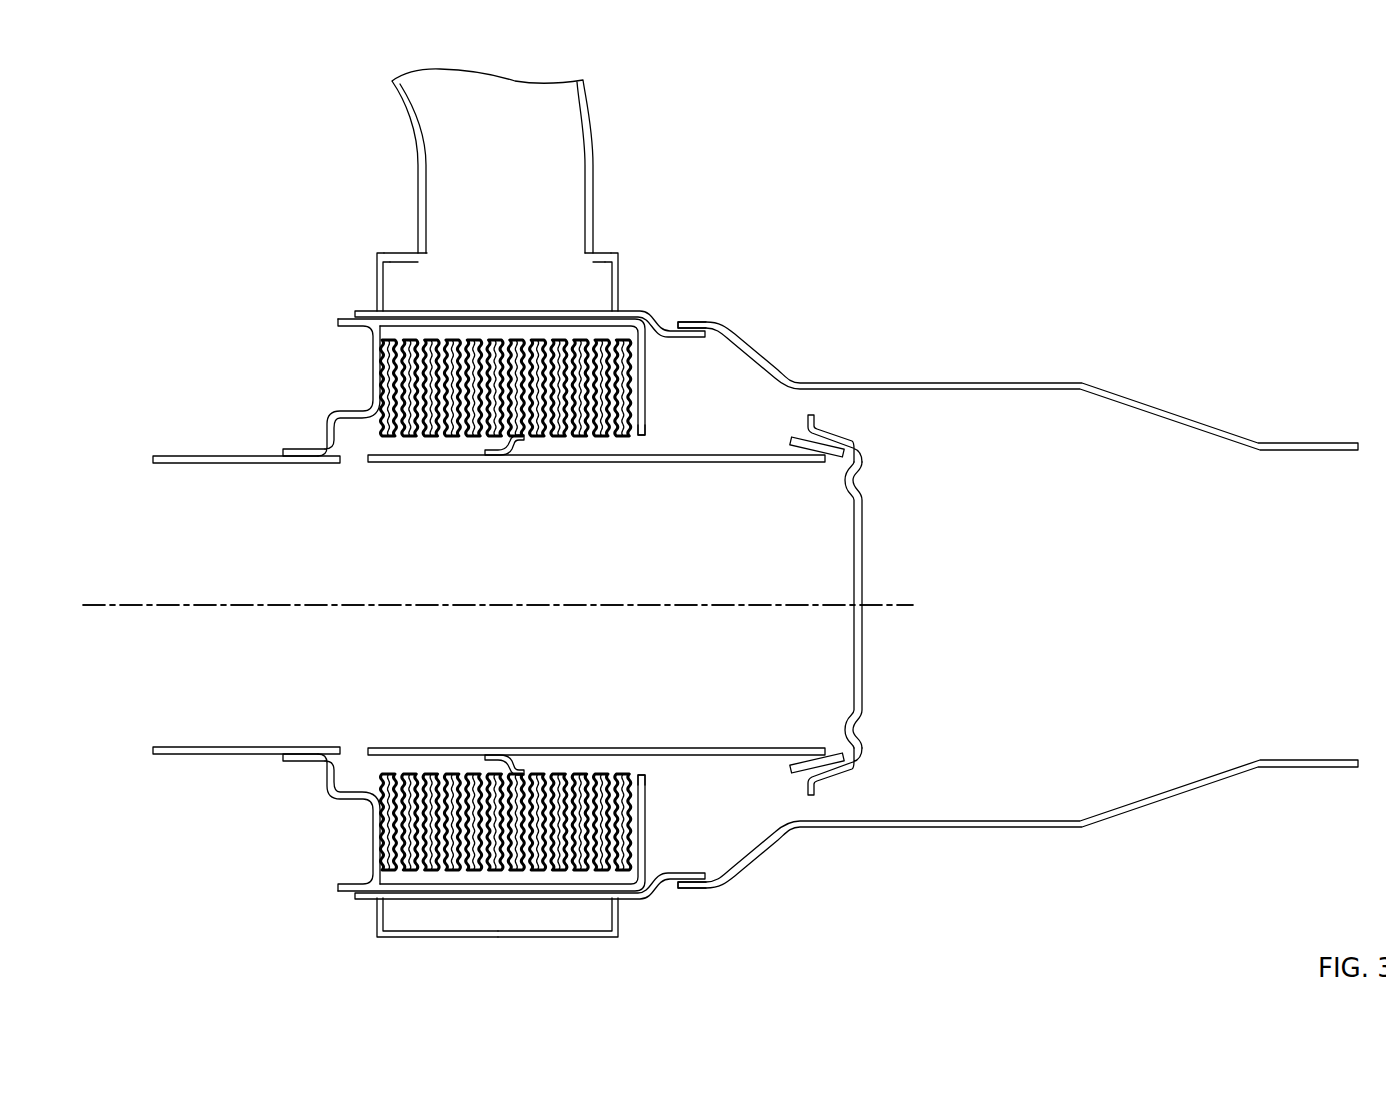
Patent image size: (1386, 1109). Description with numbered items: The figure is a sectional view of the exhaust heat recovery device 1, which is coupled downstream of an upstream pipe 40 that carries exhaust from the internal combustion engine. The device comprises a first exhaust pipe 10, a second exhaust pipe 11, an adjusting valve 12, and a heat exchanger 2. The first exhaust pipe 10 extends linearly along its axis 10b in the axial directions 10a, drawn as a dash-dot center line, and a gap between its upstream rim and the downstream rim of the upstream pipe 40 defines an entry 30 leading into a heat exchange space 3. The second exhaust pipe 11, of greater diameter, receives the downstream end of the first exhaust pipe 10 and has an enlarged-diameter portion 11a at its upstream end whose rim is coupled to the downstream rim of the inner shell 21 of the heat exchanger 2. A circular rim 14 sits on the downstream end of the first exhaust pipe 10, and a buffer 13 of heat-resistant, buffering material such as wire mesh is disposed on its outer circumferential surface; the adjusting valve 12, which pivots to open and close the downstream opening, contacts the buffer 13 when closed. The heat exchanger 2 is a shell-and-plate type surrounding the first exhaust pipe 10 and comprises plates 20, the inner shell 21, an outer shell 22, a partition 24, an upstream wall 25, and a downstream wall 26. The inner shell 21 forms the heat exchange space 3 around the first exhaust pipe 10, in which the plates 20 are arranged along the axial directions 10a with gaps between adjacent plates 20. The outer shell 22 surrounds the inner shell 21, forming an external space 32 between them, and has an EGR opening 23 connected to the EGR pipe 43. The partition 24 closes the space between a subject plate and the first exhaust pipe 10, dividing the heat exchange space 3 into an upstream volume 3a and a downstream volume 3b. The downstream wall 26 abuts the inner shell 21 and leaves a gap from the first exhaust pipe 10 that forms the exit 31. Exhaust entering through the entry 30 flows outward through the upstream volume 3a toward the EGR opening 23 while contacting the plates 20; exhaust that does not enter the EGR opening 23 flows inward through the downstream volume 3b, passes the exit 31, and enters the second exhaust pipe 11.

The exhaust heat recovery device 1 is at (720, 530).
The heat exchanger 2 is at (461, 579).
The heat exchange space 3 is at (462, 456).
The upstream volume 3a is at (412, 440).
The downstream volume 3b is at (598, 442).
The first exhaust pipe 10 is at (733, 465).
The axial directions 10a is at (1167, 187).
The axis 10b is at (733, 647).
The second exhaust pipe 11 is at (1018, 608).
The enlarged-diameter portion 11a is at (820, 383).
The adjusting valve 12 is at (886, 545).
The buffer 13 is at (810, 425).
The rim 14 is at (790, 452).
The plates 20 is at (519, 605).
The inner shell 21 is at (645, 308).
The outer shell 22 is at (403, 252).
The EGR opening 23 is at (510, 255).
The partition 24 is at (518, 450).
The upstream wall 25 is at (372, 366).
The downstream wall 26 is at (531, 605).
The entry 30 is at (352, 463).
The exit 31 is at (652, 440).
The external space 32 is at (600, 272).
The upstream pipe 40 is at (205, 464).
The EGR pipe 43 is at (593, 108).